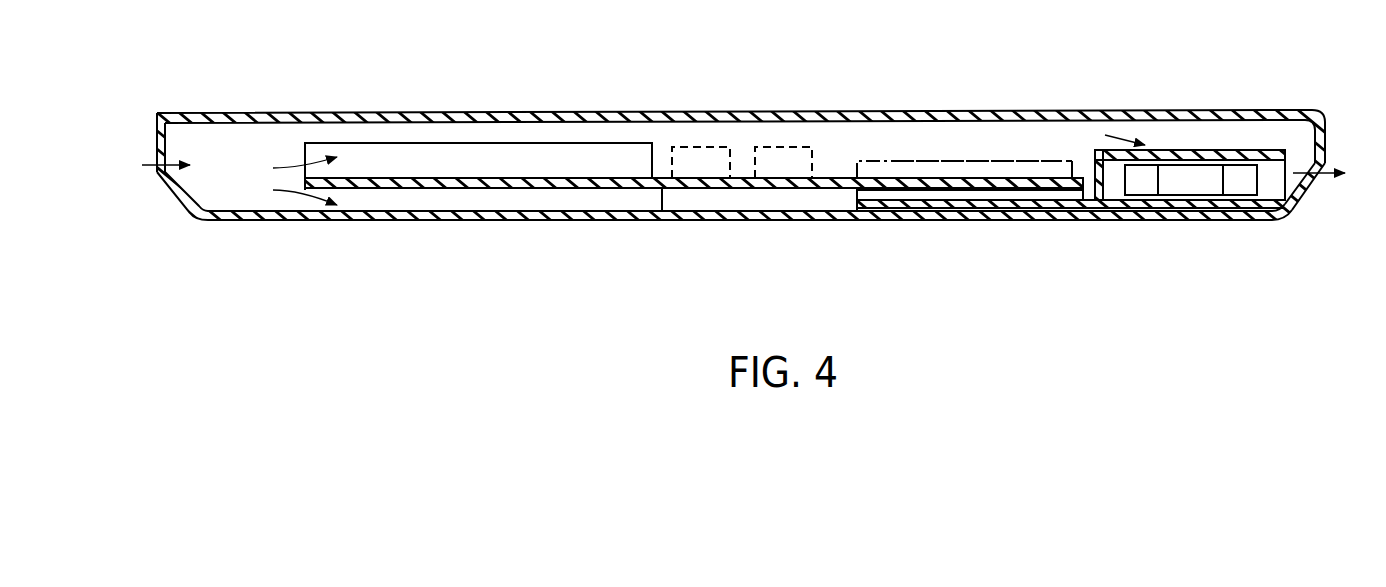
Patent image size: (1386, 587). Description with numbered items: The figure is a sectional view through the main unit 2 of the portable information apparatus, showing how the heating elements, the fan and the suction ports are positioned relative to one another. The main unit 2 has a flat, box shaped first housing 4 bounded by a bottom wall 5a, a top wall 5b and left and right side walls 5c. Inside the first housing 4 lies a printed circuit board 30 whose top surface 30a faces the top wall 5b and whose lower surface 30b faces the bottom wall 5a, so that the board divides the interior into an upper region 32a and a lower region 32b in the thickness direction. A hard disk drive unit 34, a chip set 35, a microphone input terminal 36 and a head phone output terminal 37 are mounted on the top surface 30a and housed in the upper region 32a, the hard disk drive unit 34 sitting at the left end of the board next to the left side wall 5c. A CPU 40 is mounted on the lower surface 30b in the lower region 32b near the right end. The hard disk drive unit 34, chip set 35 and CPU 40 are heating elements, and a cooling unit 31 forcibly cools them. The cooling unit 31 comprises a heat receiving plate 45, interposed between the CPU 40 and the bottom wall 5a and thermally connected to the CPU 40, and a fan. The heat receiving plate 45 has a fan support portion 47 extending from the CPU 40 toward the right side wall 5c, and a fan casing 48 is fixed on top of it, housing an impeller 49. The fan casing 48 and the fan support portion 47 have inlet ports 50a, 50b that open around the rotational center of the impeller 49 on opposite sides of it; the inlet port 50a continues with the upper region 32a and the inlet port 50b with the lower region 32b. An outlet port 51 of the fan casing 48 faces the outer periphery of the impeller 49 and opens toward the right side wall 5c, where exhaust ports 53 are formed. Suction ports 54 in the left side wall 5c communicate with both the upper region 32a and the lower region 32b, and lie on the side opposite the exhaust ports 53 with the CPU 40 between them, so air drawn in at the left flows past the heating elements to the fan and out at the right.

The main unit 2 is at (1034, 108).
The first housing 4 is at (196, 218).
The bottom wall 5a is at (773, 220).
The top wall 5b is at (486, 118).
The side wall 5c is at (160, 135).
The printed circuit board 30 is at (510, 189).
The top surface 30a is at (745, 178).
The lower surface 30b is at (665, 190).
The cooling unit 31 is at (1060, 214).
The upper region 32a is at (890, 160).
The lower region 32b is at (588, 195).
The hard disk drive unit 34 is at (398, 160).
The chip set 35 is at (963, 160).
The microphone input terminal 36 is at (697, 147).
The head phone output terminal 37 is at (796, 147).
The CPU 40 is at (895, 200).
The heat receiving plate 45 is at (975, 208).
The fan support portion 47 is at (1275, 187).
The fan casing 48 is at (1262, 150).
The impeller 49 is at (1172, 188).
The inlet port 50a is at (1148, 150).
The inlet port 50b is at (1200, 203).
The outlet port 51 is at (1290, 205).
The exhaust ports 53 is at (1308, 185).
The suction ports 54 is at (168, 185).